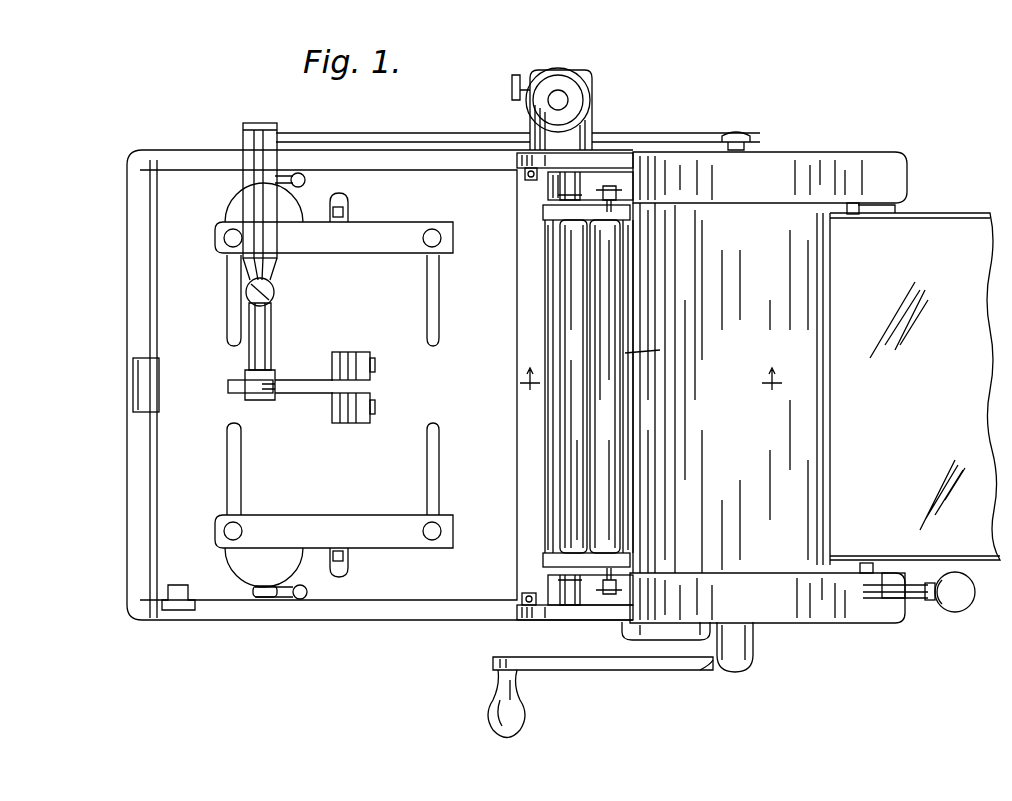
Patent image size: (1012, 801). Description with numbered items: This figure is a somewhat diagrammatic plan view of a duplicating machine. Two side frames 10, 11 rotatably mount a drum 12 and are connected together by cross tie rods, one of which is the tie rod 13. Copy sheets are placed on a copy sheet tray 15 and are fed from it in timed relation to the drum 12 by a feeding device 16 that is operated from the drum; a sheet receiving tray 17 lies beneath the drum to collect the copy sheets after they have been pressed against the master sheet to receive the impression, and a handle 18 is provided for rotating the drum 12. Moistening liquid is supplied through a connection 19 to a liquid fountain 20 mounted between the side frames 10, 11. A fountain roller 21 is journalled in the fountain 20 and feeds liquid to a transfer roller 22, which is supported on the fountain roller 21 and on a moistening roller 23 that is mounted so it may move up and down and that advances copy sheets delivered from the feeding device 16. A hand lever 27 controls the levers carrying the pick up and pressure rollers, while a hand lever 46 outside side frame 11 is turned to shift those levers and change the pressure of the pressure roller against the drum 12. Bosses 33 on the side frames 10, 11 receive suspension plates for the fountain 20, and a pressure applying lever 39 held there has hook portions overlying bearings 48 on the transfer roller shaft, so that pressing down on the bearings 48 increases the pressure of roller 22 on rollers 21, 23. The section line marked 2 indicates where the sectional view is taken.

The side frame 10 is at (765, 163).
The side frame 11 is at (782, 608).
The drum 12 is at (762, 253).
The cross tie rod 13 is at (855, 213).
The copy sheet tray 15 is at (168, 250).
The feeding device 16 is at (340, 352).
The sheet receiving tray 17 is at (967, 375).
The handle 18 is at (718, 668).
The connection 19 is at (546, 88).
The liquid fountain 20 is at (545, 275).
The fountain roller 21 is at (582, 361).
The transfer roller 22 is at (614, 441).
The moistening roller 23 is at (660, 350).
The hand lever 27 is at (915, 600).
The boss 33 is at (556, 178).
The pressure applying lever 39 is at (621, 196).
The hand lever 46 is at (684, 636).
The bearing 48 is at (582, 196).
The section line 2- 2 is at (651, 388).